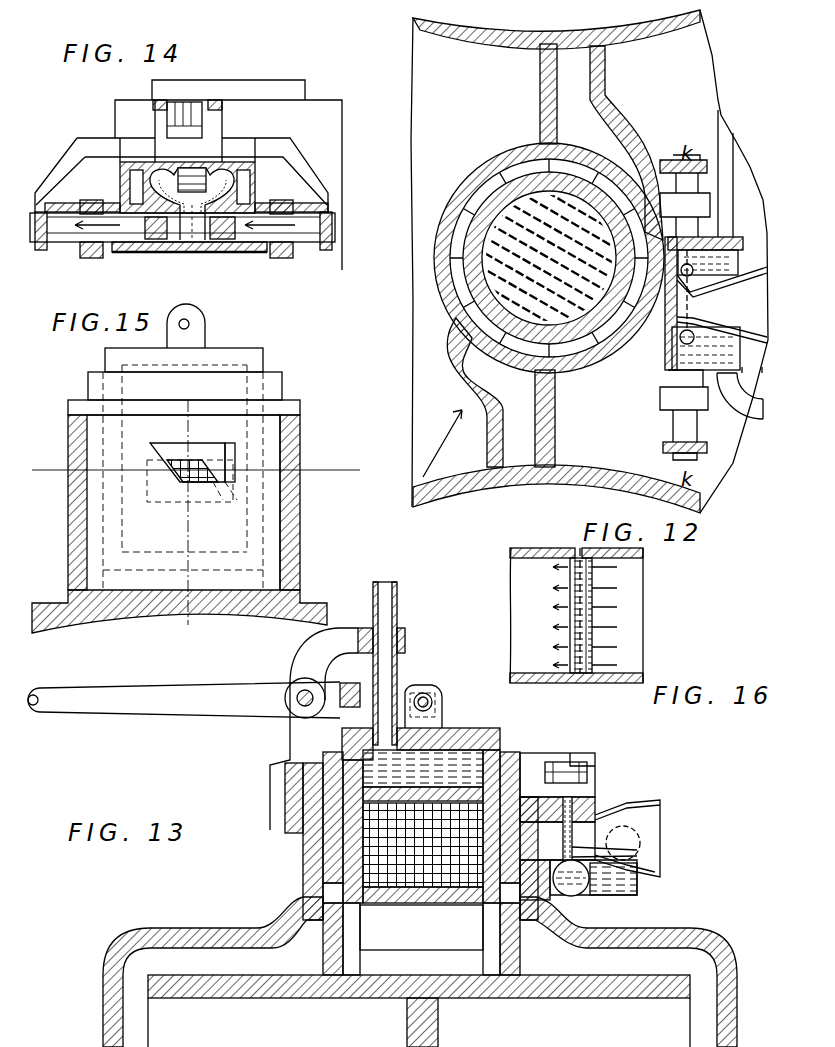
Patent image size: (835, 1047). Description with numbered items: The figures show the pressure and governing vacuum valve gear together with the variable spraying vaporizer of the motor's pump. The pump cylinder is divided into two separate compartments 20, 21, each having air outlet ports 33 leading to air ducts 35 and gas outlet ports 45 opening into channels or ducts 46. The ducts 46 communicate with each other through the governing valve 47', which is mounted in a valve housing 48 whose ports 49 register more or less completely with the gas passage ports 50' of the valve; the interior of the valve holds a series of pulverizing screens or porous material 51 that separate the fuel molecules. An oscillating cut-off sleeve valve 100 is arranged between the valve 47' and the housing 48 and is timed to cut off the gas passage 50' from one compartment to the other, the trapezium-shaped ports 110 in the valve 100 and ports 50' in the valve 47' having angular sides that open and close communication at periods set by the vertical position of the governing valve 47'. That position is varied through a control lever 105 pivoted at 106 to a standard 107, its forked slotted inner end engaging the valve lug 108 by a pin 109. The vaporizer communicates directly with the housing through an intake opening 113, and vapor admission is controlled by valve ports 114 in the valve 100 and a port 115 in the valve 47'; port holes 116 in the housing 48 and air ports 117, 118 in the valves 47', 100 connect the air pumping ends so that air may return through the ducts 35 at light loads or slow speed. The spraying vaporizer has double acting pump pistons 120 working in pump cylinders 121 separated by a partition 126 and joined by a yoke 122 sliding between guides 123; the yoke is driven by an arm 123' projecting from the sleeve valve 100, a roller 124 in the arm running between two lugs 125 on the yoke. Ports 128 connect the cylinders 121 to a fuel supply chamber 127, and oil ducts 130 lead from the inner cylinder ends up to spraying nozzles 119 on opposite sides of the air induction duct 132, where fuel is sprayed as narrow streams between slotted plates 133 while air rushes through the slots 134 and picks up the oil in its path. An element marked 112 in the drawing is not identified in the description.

In FIG. 13, the compartment 20 is at (219, 1022).
In FIG. 13, the compartment 21 is at (619, 1022).
In FIG. 13, the air outlet ports 33 is at (141, 1016).
In FIG. 13, the air ducts 35 is at (420, 972).
In FIG. 12, the gas outlet ports 45 is at (546, 255).
In FIG. 12, the channels or ducts 46 is at (608, 108).
In FIG. 15, the governing valve 47' is at (226, 361).
In FIG. 12, the governing valve 47' is at (414, 277).
In FIG. 13, the governing valve 47' is at (459, 739).
In FIG. 14, the valve housing 48 is at (332, 114).
In FIG. 15, the valve housing 48 is at (300, 452).
In FIG. 12, the valve housing 48 is at (450, 210).
In FIG. 12, the ports 49 is at (582, 163).
In FIG. 15, the valve ports 50' is at (183, 478).
In FIG. 12, the valve ports 50' is at (404, 335).
In FIG. 12, the screens 51 is at (549, 258).
In FIG. 13, the screens 51 is at (423, 768).
In FIG. 15, the oscillating cut-off valve 100 is at (105, 385).
In FIG. 12, the oscillating cut-off valve 100 is at (478, 180).
In FIG. 13, the control lever 105 is at (120, 695).
In FIG. 13, the pivot 106 is at (298, 708).
In FIG. 13, the standard 107 is at (300, 655).
In FIG. 15, the valve lug 108 is at (202, 331).
In FIG. 13, the valve lug 108 is at (420, 688).
In FIG. 13, the pin 109 is at (440, 700).
In FIG. 15, the ports 110 is at (210, 448).
In FIG. 12, the ports 110 is at (483, 347).
In FIG. 12, the outlet elbow 112 is at (665, 375).
In FIG. 12, the intake opening 113 is at (658, 292).
In FIG. 13, the intake opening 113 is at (557, 841).
In FIG. 12, the valve ports 114 is at (648, 187).
In FIG. 12, the port 115 is at (549, 258).
In FIG. 13, the port 115 is at (440, 845).
In FIG. 13, the port holes 116 is at (317, 938).
In FIG. 13, the valve air ports 117 is at (490, 930).
In FIG. 13, the valve air ports 118 is at (330, 893).
In FIG. 14, the spraying nozzles 119 is at (217, 160).
In FIG. 12, the spraying nozzles 119 is at (670, 325).
In FIG. 16, the spraying nozzles 119 is at (578, 558).
In FIG. 13, the spraying nozzles 119 is at (575, 840).
In FIG. 14, the pump pistons 120 is at (133, 250).
In FIG. 12, the pump pistons 120 is at (690, 425).
In FIG. 13, the pump pistons 120 is at (577, 887).
In FIG. 14, the pump cylinders 121 is at (254, 252).
In FIG. 14, the yoke 122 is at (290, 152).
In FIG. 12, the yoke 122 is at (663, 447).
In FIG. 13, the yoke 122 is at (582, 798).
In FIG. 13, the guides 123 is at (590, 799).
In FIG. 13, the arm 123' is at (582, 760).
In FIG. 14, the roller 124 is at (180, 115).
In FIG. 13, the roller 124 is at (590, 772).
In FIG. 14, the lugs 125 is at (162, 98).
In FIG. 14, the partition 126 is at (195, 244).
In FIG. 12, the fuel supply chamber 127 is at (706, 308).
In FIG. 13, the fuel supply chamber 127 is at (607, 882).
In FIG. 14, the ports 128 is at (135, 203).
In FIG. 14, the oil ducts 130 is at (150, 160).
In FIG. 14, the air induction duct 132 is at (187, 165).
In FIG. 12, the air induction duct 132 is at (722, 305).
In FIG. 16, the air induction duct 132 is at (625, 645).
In FIG. 13, the air induction duct 132 is at (653, 853).
In FIG. 16, the slotted plates 133 is at (567, 636).
In FIG. 13, the slotted plates 133 is at (623, 847).
In FIG. 16, the slots 134 is at (592, 585).